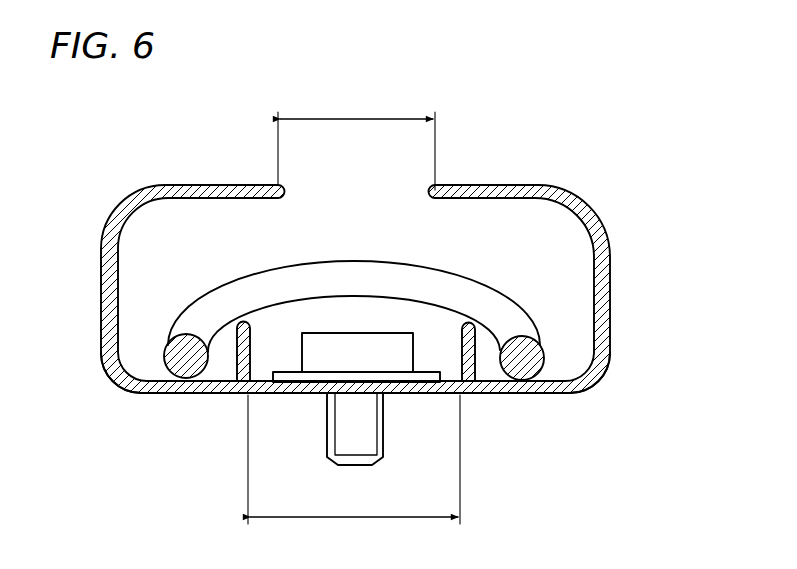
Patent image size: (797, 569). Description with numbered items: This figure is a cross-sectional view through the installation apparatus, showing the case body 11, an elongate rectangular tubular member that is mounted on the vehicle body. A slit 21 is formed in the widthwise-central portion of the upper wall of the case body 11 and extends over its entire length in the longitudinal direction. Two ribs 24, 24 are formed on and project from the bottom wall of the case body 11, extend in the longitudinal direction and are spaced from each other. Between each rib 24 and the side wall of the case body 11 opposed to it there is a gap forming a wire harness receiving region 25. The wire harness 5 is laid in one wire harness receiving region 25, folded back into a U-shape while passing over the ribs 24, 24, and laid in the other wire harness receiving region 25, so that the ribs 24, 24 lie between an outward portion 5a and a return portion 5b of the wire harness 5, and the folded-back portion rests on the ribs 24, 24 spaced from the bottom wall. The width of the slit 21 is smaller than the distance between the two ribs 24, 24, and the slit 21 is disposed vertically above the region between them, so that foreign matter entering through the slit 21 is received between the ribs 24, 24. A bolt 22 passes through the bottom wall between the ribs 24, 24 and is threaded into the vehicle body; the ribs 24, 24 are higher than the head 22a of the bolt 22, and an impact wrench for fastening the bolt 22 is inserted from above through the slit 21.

The case body 11 is at (97, 222).
The slit 21 is at (280, 191).
The wire harness 5 is at (380, 254).
The outward portion 5a is at (524, 366).
The return portion 5b is at (184, 361).
The rib 24 is at (234, 356).
The bolt 22 is at (365, 417).
The head 22a is at (311, 351).
The wire harness receiving region 25 is at (158, 381).